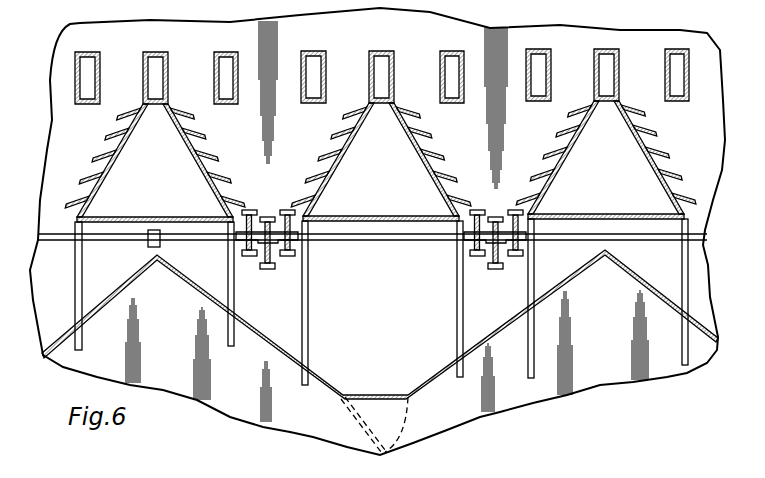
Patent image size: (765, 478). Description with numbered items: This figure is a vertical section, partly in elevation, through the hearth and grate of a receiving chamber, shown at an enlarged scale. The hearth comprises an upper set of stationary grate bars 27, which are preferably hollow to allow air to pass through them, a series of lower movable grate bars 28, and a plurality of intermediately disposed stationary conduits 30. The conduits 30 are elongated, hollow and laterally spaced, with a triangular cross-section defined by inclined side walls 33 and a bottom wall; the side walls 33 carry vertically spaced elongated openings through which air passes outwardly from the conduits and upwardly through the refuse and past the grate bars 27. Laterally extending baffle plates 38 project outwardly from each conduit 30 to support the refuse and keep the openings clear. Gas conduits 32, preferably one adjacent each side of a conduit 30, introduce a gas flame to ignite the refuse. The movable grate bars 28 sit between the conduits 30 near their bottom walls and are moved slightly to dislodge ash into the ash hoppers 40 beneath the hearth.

The stationary grate bars 27 is at (162, 53).
The movable grate bars 28 is at (272, 267).
The stationary conduits 30 is at (155, 163).
The gas conduits 32 is at (381, 232).
The side walls 33 is at (195, 158).
The baffle plates 38 is at (206, 151).
The ash hoppers 40 is at (197, 293).